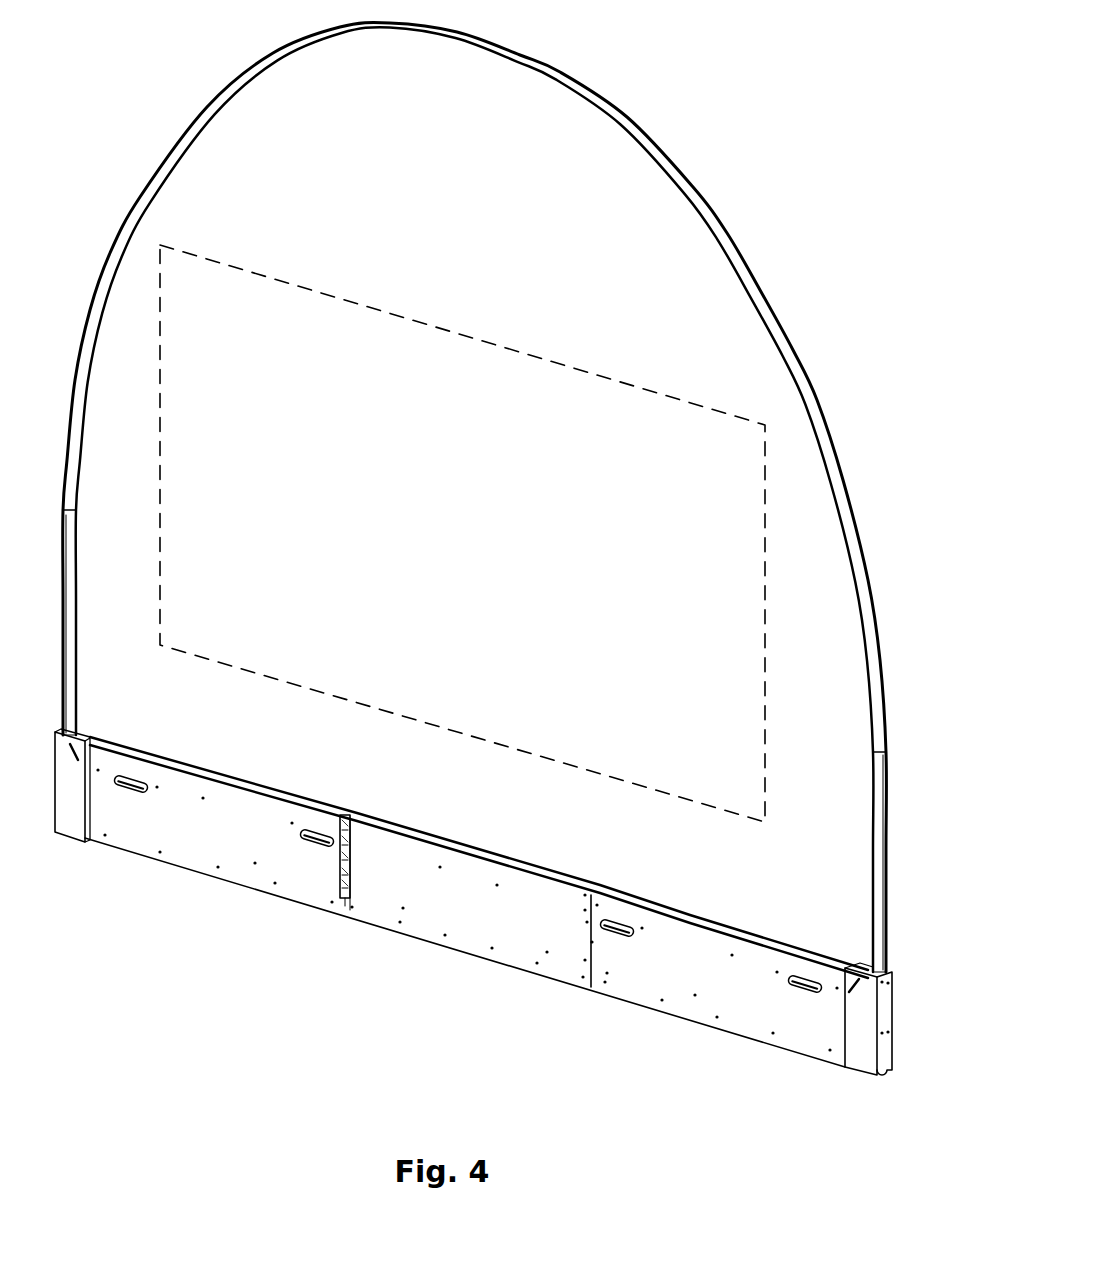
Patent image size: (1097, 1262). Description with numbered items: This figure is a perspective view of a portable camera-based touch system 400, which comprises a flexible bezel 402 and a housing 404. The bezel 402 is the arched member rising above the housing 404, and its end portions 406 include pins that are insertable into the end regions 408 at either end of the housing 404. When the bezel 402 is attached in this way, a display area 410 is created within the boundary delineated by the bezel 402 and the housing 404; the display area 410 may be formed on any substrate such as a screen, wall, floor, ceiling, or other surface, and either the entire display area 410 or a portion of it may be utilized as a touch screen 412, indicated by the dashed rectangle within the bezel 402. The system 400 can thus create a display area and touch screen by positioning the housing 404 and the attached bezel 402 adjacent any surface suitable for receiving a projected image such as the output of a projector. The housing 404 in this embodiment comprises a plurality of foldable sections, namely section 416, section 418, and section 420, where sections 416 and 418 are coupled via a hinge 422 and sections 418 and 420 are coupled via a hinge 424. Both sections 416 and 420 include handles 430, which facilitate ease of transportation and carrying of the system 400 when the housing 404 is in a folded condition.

The portable camera-based touch system 400 is at (720, 62).
The flexible bezel 402 is at (445, 30).
The housing 404 is at (383, 954).
The end portions 406 is at (67, 718).
The end regions 408 is at (68, 767).
The display area 410 is at (667, 262).
The touch screen 412 is at (463, 337).
The section 416 is at (220, 797).
The section 418 is at (400, 852).
The section 420 is at (675, 945).
The hinge 422 is at (343, 813).
The hinge 424 is at (591, 893).
The handles 430 is at (128, 788).